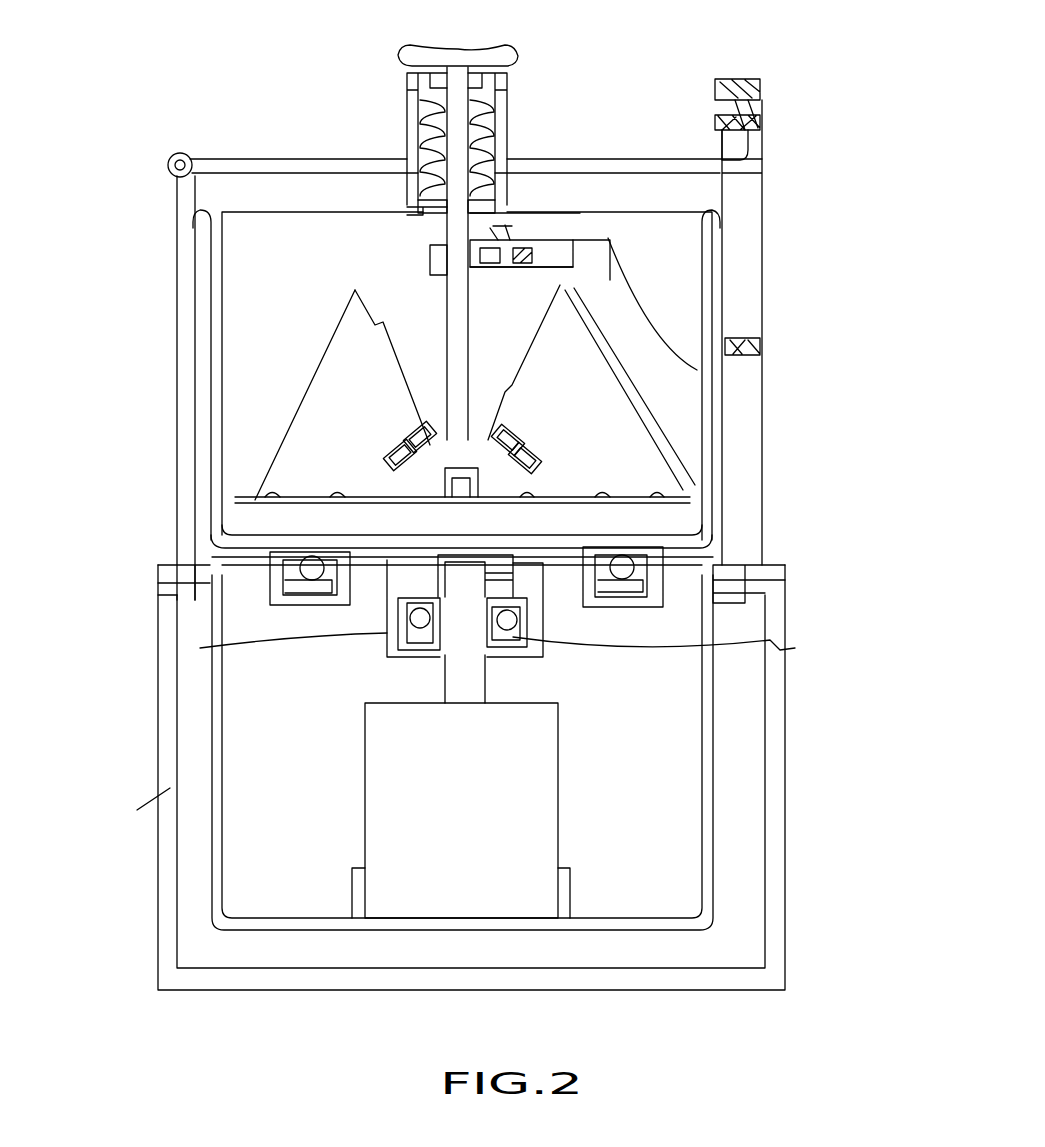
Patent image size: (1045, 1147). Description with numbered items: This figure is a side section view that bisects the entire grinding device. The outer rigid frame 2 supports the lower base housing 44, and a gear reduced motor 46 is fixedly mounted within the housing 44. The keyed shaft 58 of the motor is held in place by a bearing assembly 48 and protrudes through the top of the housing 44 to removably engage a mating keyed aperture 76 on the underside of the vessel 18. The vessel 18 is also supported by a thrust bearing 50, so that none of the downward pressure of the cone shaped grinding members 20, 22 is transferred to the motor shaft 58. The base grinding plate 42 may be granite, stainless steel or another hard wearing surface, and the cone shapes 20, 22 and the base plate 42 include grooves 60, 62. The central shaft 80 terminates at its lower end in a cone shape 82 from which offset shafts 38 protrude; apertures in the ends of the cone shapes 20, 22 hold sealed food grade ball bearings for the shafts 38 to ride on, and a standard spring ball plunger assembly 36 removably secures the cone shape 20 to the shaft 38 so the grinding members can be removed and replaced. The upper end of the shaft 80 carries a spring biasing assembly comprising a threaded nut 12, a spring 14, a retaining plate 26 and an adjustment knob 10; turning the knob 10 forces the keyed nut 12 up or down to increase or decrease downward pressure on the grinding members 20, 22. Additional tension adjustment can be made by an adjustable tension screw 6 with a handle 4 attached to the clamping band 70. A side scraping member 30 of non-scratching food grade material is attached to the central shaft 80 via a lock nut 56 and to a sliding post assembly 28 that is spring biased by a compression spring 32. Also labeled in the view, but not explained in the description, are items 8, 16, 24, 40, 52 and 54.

The outer rigid frame 2 is at (812, 710).
The handle 4 is at (742, 82).
The adjustable tension screw 6 is at (758, 138).
The bracket 8 is at (500, 248).
The adjustment knob 10 is at (500, 45).
The threaded nut 12 is at (487, 120).
The spring 14 is at (480, 150).
The lid 16 is at (185, 155).
The vessel 18 is at (215, 372).
The cone shaped grinding member 20 is at (340, 433).
The cone shaped grinding member 22 is at (620, 438).
The seal ring 24 is at (765, 345).
The retaining plate 26 is at (427, 200).
The sliding post assembly 28 is at (605, 215).
The scraping member 30 is at (640, 355).
The compression spring 32 is at (515, 245).
The spring ball plunger assembly 36 is at (400, 455).
The offset shaft 38 is at (430, 480).
The nozzle 40 is at (270, 562).
The base grinding plate 42 is at (673, 522).
The lower base housing 44 is at (708, 795).
The gear reduced motor 46 is at (517, 868).
The bearing assembly 48 is at (672, 654).
The thrust bearing 50 is at (622, 578).
The shaft block 52 is at (397, 607).
The bearing housing 54 is at (413, 572).
The lock nut 56 is at (433, 258).
The keyed shaft 58 is at (397, 650).
The groove 60 is at (603, 502).
The groove 62 is at (637, 490).
The clamping band 70 is at (748, 235).
The keyed aperture 76 is at (440, 598).
The central shaft 80 is at (447, 330).
The cone shape 82 is at (300, 578).